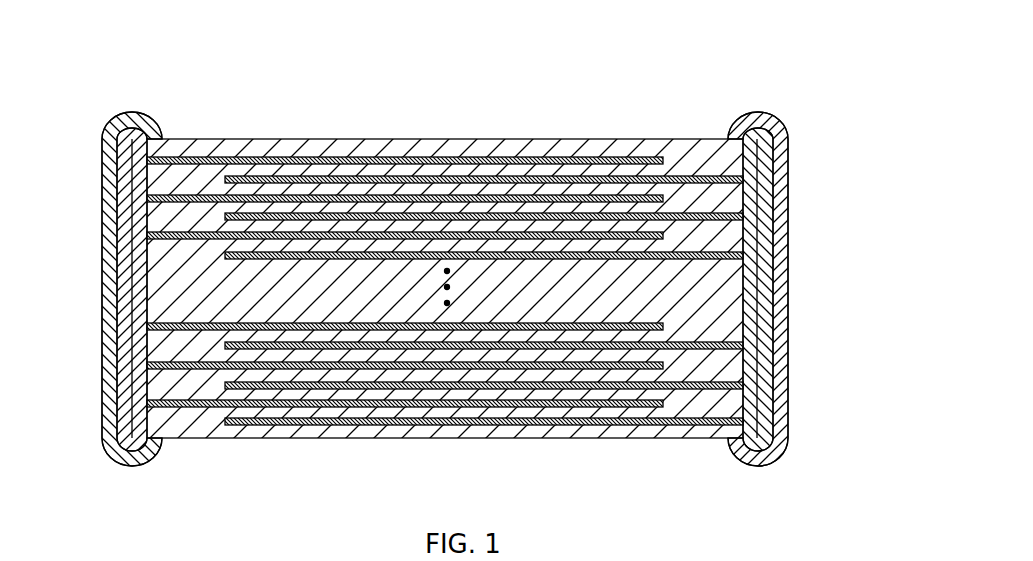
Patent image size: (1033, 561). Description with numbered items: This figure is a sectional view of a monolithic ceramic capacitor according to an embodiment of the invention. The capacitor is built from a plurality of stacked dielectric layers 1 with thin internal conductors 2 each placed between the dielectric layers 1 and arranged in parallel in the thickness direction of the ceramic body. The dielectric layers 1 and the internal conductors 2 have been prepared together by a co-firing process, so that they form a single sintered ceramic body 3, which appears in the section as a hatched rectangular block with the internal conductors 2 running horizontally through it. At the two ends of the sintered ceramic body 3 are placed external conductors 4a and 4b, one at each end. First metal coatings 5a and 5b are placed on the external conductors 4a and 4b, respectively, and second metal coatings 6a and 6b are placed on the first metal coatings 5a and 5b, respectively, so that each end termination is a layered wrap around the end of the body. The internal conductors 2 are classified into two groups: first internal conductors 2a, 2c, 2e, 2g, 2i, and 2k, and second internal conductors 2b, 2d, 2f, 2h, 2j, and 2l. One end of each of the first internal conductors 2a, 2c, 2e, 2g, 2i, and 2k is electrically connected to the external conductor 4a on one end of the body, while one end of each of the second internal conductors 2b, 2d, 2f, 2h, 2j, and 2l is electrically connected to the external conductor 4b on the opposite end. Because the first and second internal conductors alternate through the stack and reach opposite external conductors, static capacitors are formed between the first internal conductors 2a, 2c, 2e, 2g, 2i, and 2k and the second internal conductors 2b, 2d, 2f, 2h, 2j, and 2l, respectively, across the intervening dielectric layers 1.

The dielectric layer 1 is at (484, 255).
The internal conductor 2 is at (539, 300).
The first internal conductor 2a is at (665, 161).
The second internal conductor 2b is at (750, 180).
The first internal conductor 2c is at (665, 198).
The second internal conductor 2d is at (750, 216).
The first internal conductor 2e is at (665, 236).
The second internal conductor 2f is at (750, 255).
The first internal conductor 2g is at (665, 326).
The second internal conductor 2h is at (750, 345).
The first internal conductor 2i is at (665, 365).
The second internal conductor 2j is at (750, 385).
The first internal conductor 2k is at (665, 403).
The second internal conductor 2l is at (542, 447).
The sintered ceramic body 3 is at (497, 141).
The external conductor 4a is at (108, 166).
The external conductor 4b is at (784, 120).
The first metal coating 5a is at (122, 214).
The first metal coating 5b is at (787, 130).
The second metal coating 6a is at (129, 109).
The second metal coating 6b is at (757, 110).